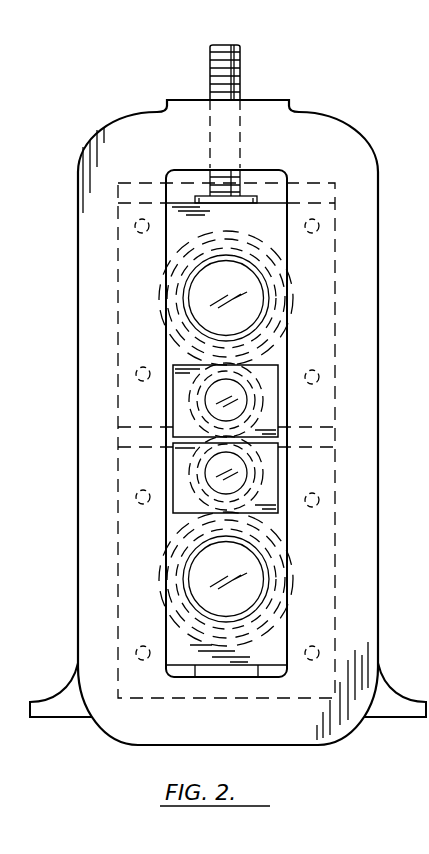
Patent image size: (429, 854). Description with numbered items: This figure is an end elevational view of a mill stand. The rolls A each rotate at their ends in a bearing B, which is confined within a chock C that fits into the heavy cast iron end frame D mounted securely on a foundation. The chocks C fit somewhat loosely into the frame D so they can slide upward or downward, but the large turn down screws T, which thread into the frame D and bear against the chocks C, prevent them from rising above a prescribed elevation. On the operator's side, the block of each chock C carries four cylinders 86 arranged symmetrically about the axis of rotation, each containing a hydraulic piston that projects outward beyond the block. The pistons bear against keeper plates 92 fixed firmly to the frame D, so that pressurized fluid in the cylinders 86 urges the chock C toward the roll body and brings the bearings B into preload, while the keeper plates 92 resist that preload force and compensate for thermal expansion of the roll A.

The cylinder 86 is at (135, 225).
The keeper plate 92 is at (318, 354).
The turn down screw T is at (243, 63).
The end frame D is at (340, 136).
The chock C is at (270, 225).
The bearing B is at (285, 280).
The roll A is at (250, 313).